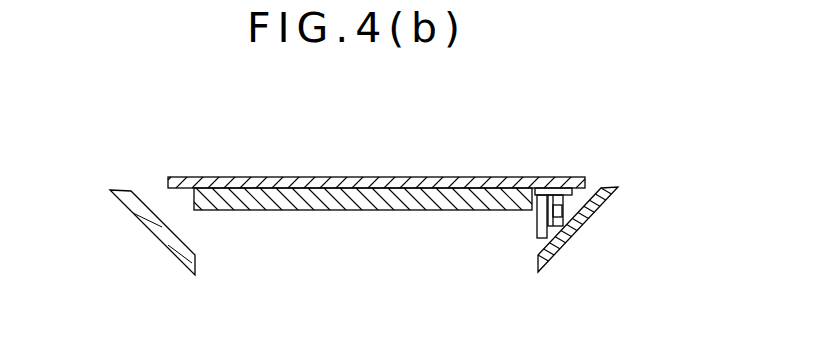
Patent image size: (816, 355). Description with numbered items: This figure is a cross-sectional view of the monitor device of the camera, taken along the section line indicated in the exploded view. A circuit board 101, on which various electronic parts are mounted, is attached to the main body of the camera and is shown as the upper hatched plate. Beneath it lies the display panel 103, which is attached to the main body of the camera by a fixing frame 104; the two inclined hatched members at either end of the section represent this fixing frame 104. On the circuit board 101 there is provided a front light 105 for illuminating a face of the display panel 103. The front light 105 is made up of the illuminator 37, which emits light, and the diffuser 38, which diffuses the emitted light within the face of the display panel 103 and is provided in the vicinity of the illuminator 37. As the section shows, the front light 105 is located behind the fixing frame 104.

The circuit board 101 is at (383, 182).
The display panel 103 is at (340, 210).
The fixing frame 104 is at (162, 243).
The front light 105 is at (546, 156).
The diffuser 38 is at (538, 177).
The illuminator 37 is at (568, 177).